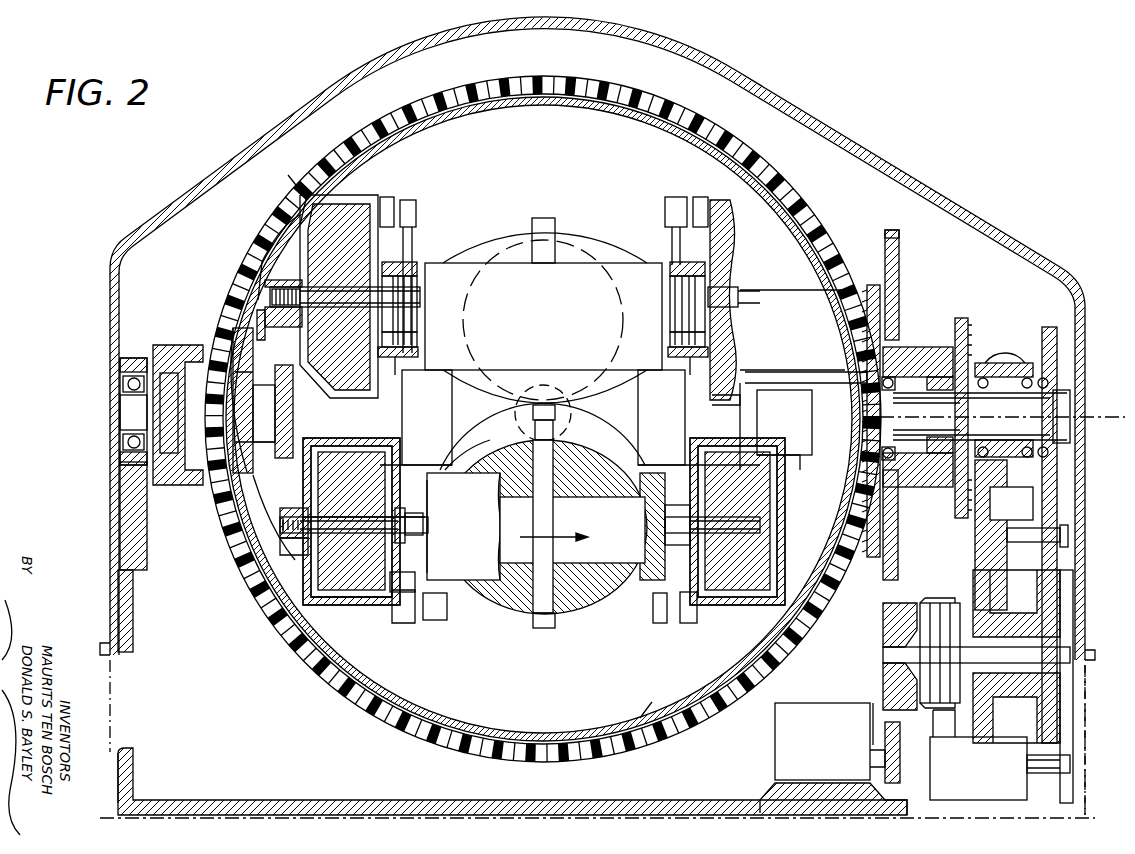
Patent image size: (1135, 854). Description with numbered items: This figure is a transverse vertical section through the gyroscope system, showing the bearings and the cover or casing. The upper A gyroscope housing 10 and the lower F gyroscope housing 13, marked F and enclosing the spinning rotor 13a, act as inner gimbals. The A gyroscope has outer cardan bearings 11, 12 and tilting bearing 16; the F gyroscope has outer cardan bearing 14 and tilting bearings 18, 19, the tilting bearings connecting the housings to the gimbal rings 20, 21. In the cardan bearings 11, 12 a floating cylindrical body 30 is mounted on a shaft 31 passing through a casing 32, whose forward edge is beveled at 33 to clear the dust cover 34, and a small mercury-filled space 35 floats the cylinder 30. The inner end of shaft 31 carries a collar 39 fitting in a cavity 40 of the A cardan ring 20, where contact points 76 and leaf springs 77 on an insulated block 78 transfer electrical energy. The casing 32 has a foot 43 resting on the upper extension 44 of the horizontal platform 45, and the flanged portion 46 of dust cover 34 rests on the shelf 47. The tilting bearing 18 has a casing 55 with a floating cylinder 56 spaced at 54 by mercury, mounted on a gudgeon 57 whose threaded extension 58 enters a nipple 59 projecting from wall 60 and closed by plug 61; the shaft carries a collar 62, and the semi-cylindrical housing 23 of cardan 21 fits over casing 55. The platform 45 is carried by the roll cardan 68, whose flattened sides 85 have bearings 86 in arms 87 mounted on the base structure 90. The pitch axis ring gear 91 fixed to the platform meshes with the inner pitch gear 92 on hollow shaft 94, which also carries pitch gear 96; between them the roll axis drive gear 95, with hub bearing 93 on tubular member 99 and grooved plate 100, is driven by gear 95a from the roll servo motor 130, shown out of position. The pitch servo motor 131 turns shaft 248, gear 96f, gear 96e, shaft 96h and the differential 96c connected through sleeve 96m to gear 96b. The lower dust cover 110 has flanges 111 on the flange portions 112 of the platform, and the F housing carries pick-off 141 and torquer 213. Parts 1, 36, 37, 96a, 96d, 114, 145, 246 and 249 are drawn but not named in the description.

The housing 1 is at (845, 138).
The A gyroscope housing 10 is at (562, 236).
The outer cardan bearing 11 is at (400, 200).
The outer cardan bearing 12 is at (712, 197).
The F gyroscope housing 13 is at (473, 610).
The spinning rotor 13a is at (498, 519).
The outer cardan bearing 14 is at (592, 428).
The tilting bearing 16 is at (608, 292).
The tilting bearing 18 is at (420, 612).
The tilting bearing 19 is at (688, 624).
The A cardan ring 20 is at (676, 262).
The outer cardan 21 is at (418, 545).
The semi-cylindrical housing 23 is at (322, 440).
The floating cylindrical body 30 is at (360, 240).
The shaft 31 is at (748, 300).
The casing 32 is at (345, 200).
The beveled edge 33 is at (300, 200).
The dust cover 34 is at (432, 119).
The mercury space 35 is at (310, 185).
The trunnion bearing 36 is at (272, 297).
The bearing bracket 37 is at (280, 280).
The collar 39 is at (398, 265).
The cavity 40 is at (418, 318).
The foot 43 is at (263, 332).
The upper extension 44 is at (285, 372).
The horizontal platform ring 45 is at (836, 410).
The flanged portion 46 is at (245, 370).
The horizontal shelf 47 is at (238, 380).
The mercury spacing 54 is at (382, 592).
The tilting bearing casing 55 is at (360, 606).
The floating cylinder 56 is at (333, 600).
The gudgeon 57 is at (322, 540).
The threaded extension 58 is at (283, 525).
The nipple 59 is at (288, 508).
The housing wall 60 is at (275, 590).
The plug 61 is at (288, 520).
The collar 62 is at (400, 508).
The roll cardan 68 is at (165, 492).
The contact points 76 is at (412, 292).
The leaf springs 77 is at (418, 345).
The insulated block 78 is at (395, 360).
The flattened sides 85 is at (128, 408).
The bearings 86 is at (130, 443).
The arms 87 is at (133, 625).
The base structure 90 is at (1085, 735).
The pitch axis ring gear 91 is at (683, 117).
The inner pitch gear 92 is at (866, 560).
The hub bearing 93 is at (900, 347).
The hollow shaft 94 is at (905, 478).
The roll axis drive gear 95 is at (899, 245).
The gear 95a is at (898, 755).
The pitch gear 96 is at (1045, 327).
The gear pin 96a is at (1058, 518).
The gear 96b is at (1040, 705).
The differential 96c is at (955, 595).
The bevel gear 96d is at (885, 618).
The gear 96e is at (1073, 705).
The gear 96f is at (1073, 780).
The shaft 96h is at (970, 655).
The sleeve 96m is at (1003, 625).
The tubular member 99 is at (927, 357).
The grooved plate member 100 is at (958, 318).
The lower dust cover 110 is at (640, 720).
The upper flanges 111 is at (237, 478).
The flange portions 112 is at (262, 440).
The roll axis shaft 114 is at (1105, 414).
The roll servo motor 130 is at (775, 710).
The pitch servo motor 131 is at (940, 736).
The pick-off 141 is at (665, 625).
The pickoff 145 is at (388, 197).
The torquer 213 is at (398, 625).
The torquer 246 is at (672, 197).
The shaft 248 is at (1048, 775).
The roll motor shaft 249 is at (873, 715).
The F gyroscope F is at (469, 452).